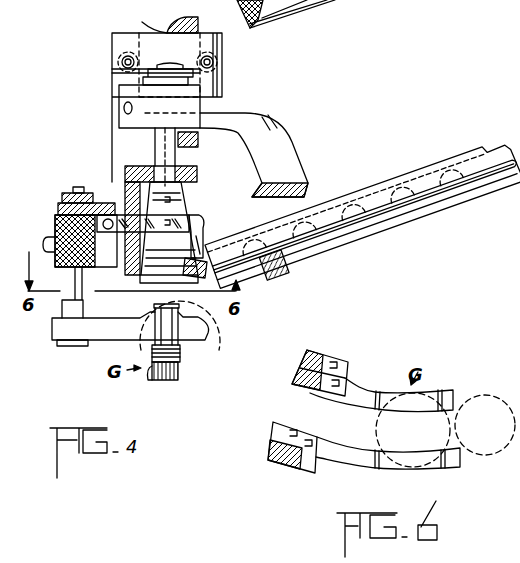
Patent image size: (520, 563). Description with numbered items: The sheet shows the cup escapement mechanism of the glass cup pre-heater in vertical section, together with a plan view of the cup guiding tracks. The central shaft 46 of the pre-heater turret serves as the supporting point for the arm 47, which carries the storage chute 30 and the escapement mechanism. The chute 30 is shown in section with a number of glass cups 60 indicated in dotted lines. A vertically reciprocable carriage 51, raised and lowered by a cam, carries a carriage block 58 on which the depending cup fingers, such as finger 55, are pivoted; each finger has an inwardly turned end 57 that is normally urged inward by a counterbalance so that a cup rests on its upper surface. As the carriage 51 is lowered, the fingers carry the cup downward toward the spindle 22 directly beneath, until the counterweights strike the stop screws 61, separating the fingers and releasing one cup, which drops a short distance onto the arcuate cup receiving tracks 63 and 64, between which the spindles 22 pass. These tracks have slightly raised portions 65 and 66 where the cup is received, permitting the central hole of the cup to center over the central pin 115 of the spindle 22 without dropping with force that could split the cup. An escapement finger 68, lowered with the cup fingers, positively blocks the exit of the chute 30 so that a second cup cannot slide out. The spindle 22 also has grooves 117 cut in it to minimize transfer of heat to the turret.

In FIG. 4, the central shaft 46 is at (142, 22).
In FIG. 4, the arm 47 is at (111, 134).
In FIG. 6, the arm 47 is at (316, 356).
In FIG. 4, the carriage 51 is at (272, 143).
In FIG. 4, the carriage block 58 is at (193, 177).
In FIG. 4, the finger 55 is at (198, 181).
In FIG. 4, the inwardly turned end 57 is at (141, 292).
In FIG. 4, the stop screw 61 is at (186, 212).
In FIG. 4, the escapement finger 68 is at (210, 223).
In FIG. 4, the glass cup 60 is at (219, 323).
In FIG. 6, the glass cup 60 is at (487, 397).
In FIG. 4, the storage chute 30 is at (424, 212).
In FIG. 4, the arcuate cup receiving track 64 is at (112, 333).
In FIG. 6, the arcuate cup receiving track 64 is at (358, 393).
In FIG. 4, the raised portion 66 is at (176, 327).
In FIG. 6, the raised portion 66 is at (432, 391).
In FIG. 4, the central pin 115 is at (183, 345).
In FIG. 4, the spindle 22 is at (178, 368).
In FIG. 4, the groove 117 is at (155, 377).
In FIG. 6, the arcuate cup receiving track 63 is at (355, 459).
In FIG. 6, the raised portion 65 is at (438, 463).